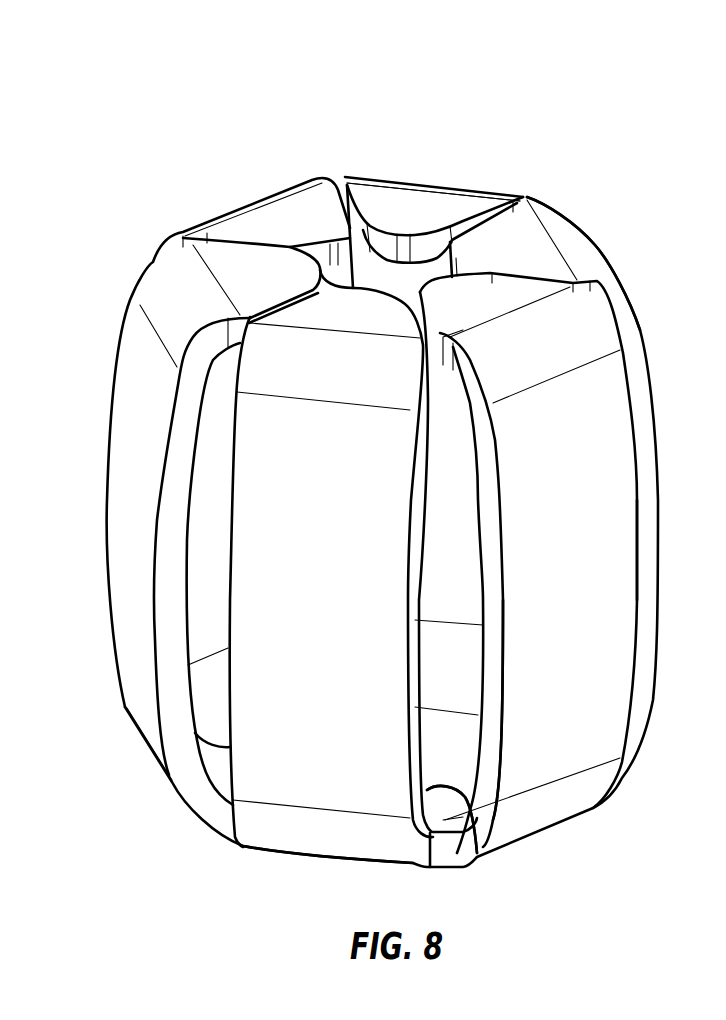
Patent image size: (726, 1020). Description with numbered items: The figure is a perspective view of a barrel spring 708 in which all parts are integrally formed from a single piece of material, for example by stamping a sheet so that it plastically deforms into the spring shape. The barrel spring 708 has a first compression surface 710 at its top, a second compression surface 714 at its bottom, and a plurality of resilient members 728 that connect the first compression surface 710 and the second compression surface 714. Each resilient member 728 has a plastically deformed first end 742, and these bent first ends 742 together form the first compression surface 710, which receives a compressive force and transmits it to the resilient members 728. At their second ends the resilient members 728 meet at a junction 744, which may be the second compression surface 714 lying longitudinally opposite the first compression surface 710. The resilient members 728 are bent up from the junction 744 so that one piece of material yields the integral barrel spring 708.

The barrel spring 708 is at (648, 91).
The first compression surface 710 is at (413, 210).
The first end 742 is at (510, 237).
The resilient members 728 is at (607, 562).
The junction 744 is at (477, 850).
The second compression surface 714 is at (300, 866).